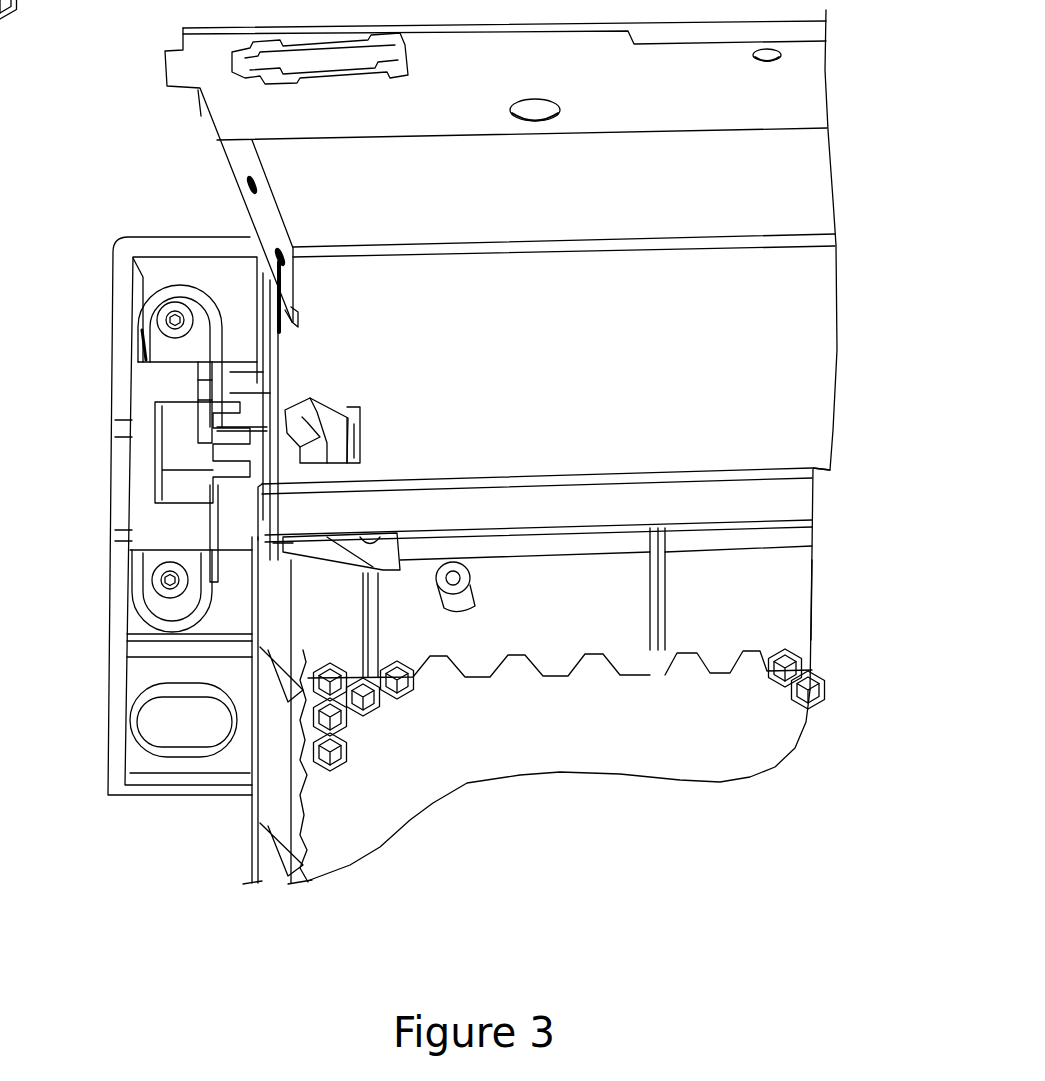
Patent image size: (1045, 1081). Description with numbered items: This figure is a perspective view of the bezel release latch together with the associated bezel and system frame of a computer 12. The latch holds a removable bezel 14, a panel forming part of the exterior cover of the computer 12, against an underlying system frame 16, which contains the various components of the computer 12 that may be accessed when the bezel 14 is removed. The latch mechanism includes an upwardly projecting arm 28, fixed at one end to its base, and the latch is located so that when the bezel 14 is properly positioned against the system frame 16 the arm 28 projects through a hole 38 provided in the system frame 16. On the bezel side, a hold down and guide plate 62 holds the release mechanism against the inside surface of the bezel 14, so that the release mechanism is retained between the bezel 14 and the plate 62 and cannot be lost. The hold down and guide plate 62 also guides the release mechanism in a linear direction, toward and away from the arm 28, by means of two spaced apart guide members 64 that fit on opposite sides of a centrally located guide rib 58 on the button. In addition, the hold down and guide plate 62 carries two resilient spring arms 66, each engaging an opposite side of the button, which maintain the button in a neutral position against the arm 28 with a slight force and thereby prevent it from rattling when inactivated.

The computer 12 is at (748, 808).
The bezel 14 is at (403, 782).
The system frame 16 is at (313, 183).
The arm 28 is at (319, 436).
The hole 38 is at (363, 429).
The guide rib 58 is at (258, 457).
The hold down and guide plate 62 is at (158, 293).
The guide members 64 is at (233, 438).
The resilient spring arms 66 is at (235, 512).